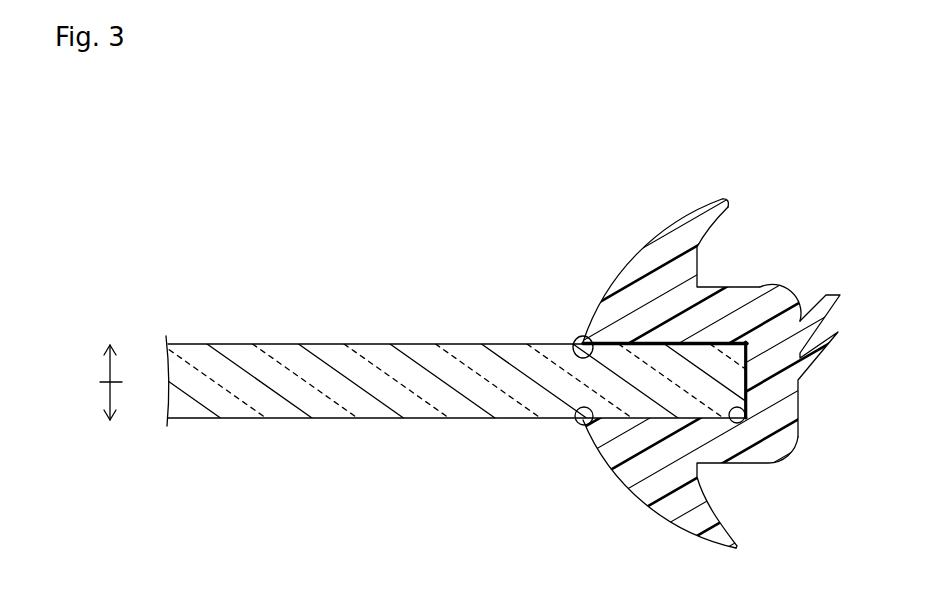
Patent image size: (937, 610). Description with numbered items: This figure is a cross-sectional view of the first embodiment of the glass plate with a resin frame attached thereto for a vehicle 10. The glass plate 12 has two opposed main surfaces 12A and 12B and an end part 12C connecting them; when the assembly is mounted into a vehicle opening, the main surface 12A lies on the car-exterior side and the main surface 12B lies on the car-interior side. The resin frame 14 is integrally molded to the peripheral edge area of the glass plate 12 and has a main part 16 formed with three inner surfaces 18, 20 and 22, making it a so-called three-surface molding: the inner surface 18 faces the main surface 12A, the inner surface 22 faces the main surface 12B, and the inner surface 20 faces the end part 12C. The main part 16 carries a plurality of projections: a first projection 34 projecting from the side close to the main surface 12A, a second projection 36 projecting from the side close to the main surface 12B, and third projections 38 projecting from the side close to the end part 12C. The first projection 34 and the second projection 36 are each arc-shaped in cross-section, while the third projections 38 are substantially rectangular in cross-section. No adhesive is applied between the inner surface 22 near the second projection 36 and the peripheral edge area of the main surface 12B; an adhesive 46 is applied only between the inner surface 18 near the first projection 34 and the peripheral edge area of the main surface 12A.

The glass plate with a resin frame attached thereto for a vehicle 10 is at (485, 107).
The glass plate 12 is at (250, 334).
The main surface 12A is at (328, 343).
The main surface 12B is at (328, 418).
The end part 12C is at (748, 398).
The resin frame 14 is at (775, 190).
The main part 16 is at (741, 290).
The inner surface 18 is at (577, 341).
The inner surface 20 is at (725, 425).
The inner surface 22 is at (577, 420).
The first projection 34 is at (682, 219).
The second projection 36 is at (678, 523).
The third projections 38 is at (840, 296).
The adhesive 46 is at (621, 342).